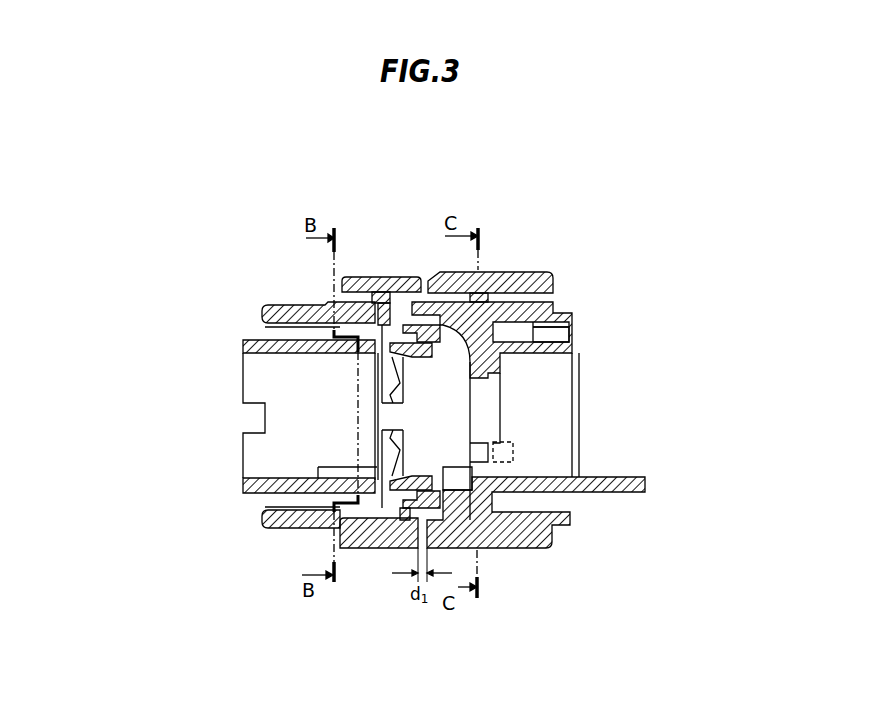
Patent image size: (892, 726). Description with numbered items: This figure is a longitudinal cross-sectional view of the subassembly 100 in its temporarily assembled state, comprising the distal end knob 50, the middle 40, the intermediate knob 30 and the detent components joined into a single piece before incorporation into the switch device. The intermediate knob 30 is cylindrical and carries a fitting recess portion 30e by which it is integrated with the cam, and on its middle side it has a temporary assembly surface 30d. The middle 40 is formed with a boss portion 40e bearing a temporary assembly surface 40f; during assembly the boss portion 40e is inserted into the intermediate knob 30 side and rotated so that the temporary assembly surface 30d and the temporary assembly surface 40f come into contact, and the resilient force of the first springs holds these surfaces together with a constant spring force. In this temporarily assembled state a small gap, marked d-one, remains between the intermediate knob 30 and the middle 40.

The subassembly 100 is at (578, 170).
The distal end knob 50 is at (258, 340).
The middle 40 is at (383, 277).
The intermediate knob 30 is at (505, 273).
The fitting recess portion 30e is at (563, 337).
The temporary assembly surface 30d is at (490, 455).
The boss portion 40e is at (513, 442).
The temporary assembly surface 40f is at (486, 443).